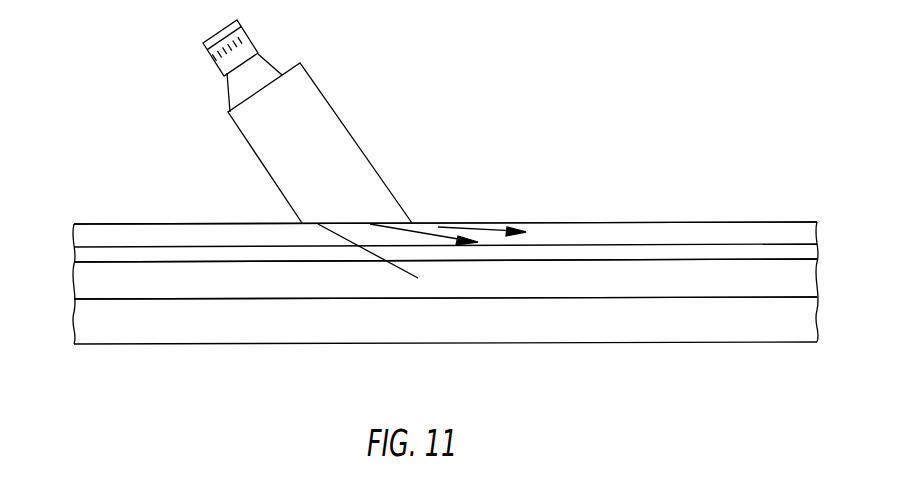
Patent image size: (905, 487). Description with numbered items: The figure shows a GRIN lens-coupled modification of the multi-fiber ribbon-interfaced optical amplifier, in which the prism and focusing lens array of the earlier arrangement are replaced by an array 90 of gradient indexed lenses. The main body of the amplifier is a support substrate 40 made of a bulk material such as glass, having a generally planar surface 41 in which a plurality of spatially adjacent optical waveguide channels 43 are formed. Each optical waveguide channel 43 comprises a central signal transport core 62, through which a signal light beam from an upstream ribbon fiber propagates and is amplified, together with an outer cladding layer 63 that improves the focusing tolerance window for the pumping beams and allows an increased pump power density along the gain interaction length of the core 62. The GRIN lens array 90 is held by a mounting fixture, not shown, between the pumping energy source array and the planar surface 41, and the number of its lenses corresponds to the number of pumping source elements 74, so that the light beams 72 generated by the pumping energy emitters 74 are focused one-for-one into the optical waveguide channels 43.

The support substrate 40 is at (429, 334).
The planar surface 41 is at (600, 222).
The optical waveguide channel 43 is at (206, 289).
The central core 62 is at (82, 257).
The outer cladding layer 63 is at (90, 280).
The light beam 72 is at (270, 72).
The pumping source element 74 is at (207, 53).
The GRIN lens array 90 is at (333, 107).